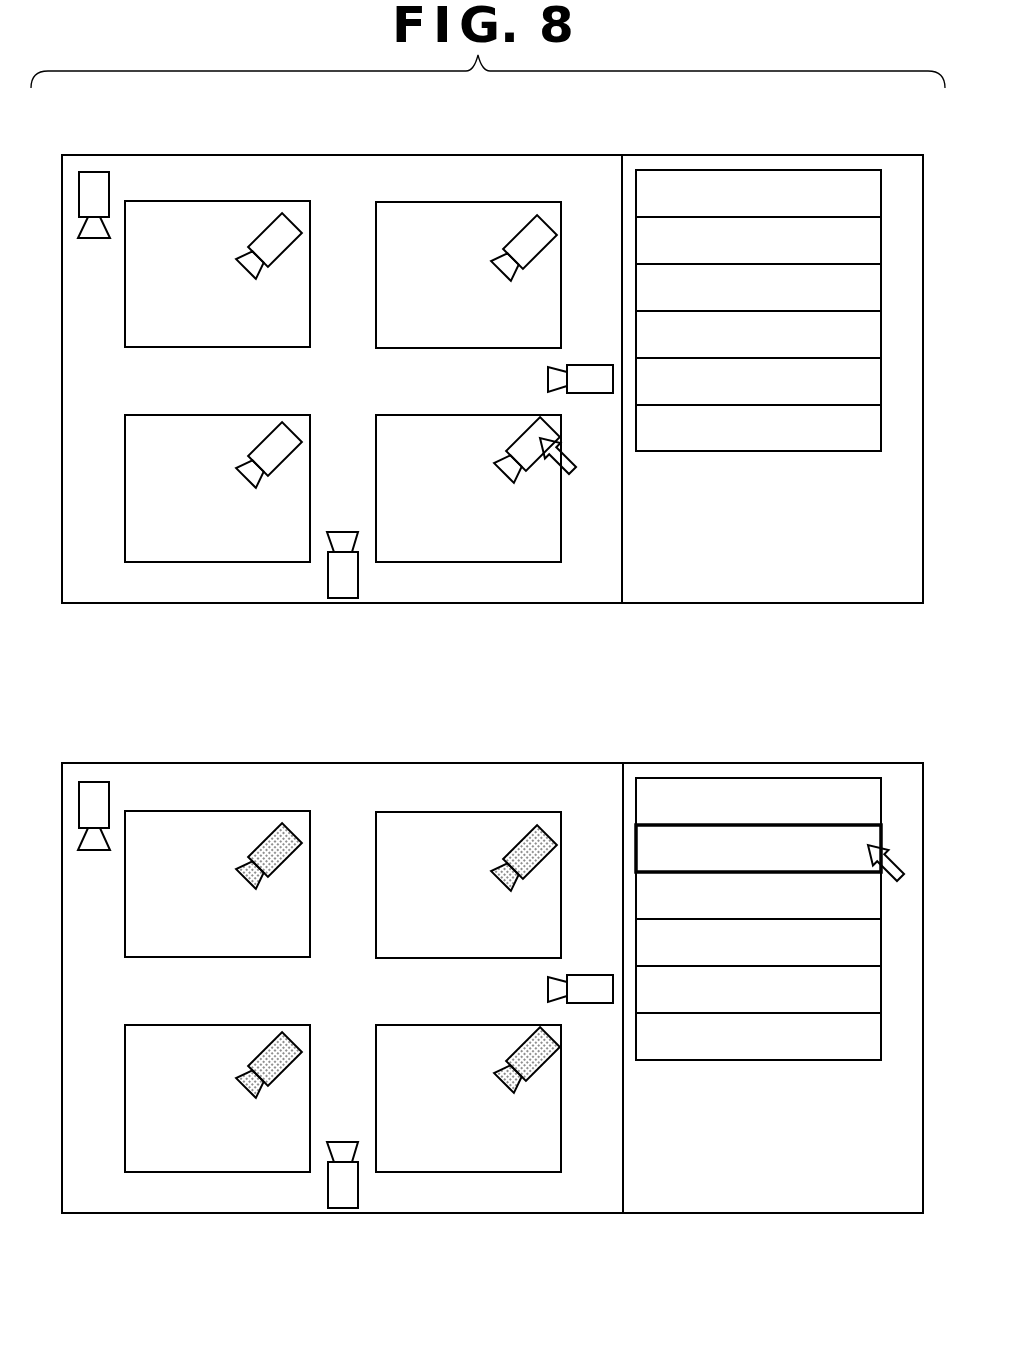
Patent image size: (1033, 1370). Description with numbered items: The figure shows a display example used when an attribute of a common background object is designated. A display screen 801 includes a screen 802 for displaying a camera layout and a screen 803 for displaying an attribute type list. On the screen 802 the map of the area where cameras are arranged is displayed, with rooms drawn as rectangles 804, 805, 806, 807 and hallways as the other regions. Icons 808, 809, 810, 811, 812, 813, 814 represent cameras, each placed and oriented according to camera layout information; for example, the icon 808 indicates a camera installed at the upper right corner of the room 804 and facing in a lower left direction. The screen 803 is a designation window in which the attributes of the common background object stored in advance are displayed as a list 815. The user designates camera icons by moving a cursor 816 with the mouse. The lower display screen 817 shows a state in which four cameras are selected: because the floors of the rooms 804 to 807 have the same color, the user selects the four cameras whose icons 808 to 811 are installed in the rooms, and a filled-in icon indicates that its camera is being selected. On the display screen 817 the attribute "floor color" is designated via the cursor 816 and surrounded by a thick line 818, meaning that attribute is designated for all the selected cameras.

The display screen 801 is at (107, 153).
The screen for displaying a camera layout 802 is at (593, 154).
The screen for displaying an attribute type list 803 is at (889, 586).
The room 804 is at (281, 201).
The room 805 is at (532, 202).
The room 806 is at (281, 415).
The room 807 is at (505, 415).
The camera icon 808 is at (257, 279).
The camera icon 809 is at (509, 282).
The camera icon 810 is at (257, 488).
The camera icon 811 is at (515, 482).
The camera icon 812 is at (110, 180).
The camera icon 813 is at (591, 364).
The camera icon 814 is at (359, 581).
The list 815 is at (876, 166).
The cursor 816 is at (575, 477).
The display screen 817 is at (106, 762).
The thick line 818 is at (884, 838).